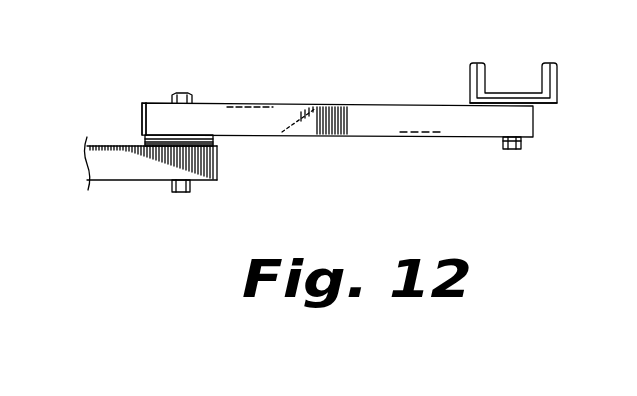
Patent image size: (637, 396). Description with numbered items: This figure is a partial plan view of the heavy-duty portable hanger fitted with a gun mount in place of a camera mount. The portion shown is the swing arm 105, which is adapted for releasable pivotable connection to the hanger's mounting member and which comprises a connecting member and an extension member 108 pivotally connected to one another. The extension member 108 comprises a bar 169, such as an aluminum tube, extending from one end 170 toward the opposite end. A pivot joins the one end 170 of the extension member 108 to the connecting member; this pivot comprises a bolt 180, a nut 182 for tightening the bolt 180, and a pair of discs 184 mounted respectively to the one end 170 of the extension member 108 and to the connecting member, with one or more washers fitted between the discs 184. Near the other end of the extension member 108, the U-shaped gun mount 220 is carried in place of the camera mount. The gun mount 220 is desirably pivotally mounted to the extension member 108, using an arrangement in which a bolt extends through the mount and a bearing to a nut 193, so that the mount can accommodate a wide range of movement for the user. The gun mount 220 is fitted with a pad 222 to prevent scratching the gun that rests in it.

The swing arm 105 is at (124, 191).
The extension member 108 is at (251, 98).
The bar 169 is at (353, 108).
The one end 170 is at (152, 102).
The bolt 180 is at (185, 92).
The nut 182 is at (178, 195).
The pair of discs 184 is at (215, 139).
The nut 193 is at (515, 152).
The gun mount 220 is at (555, 102).
The pad 222 is at (507, 92).